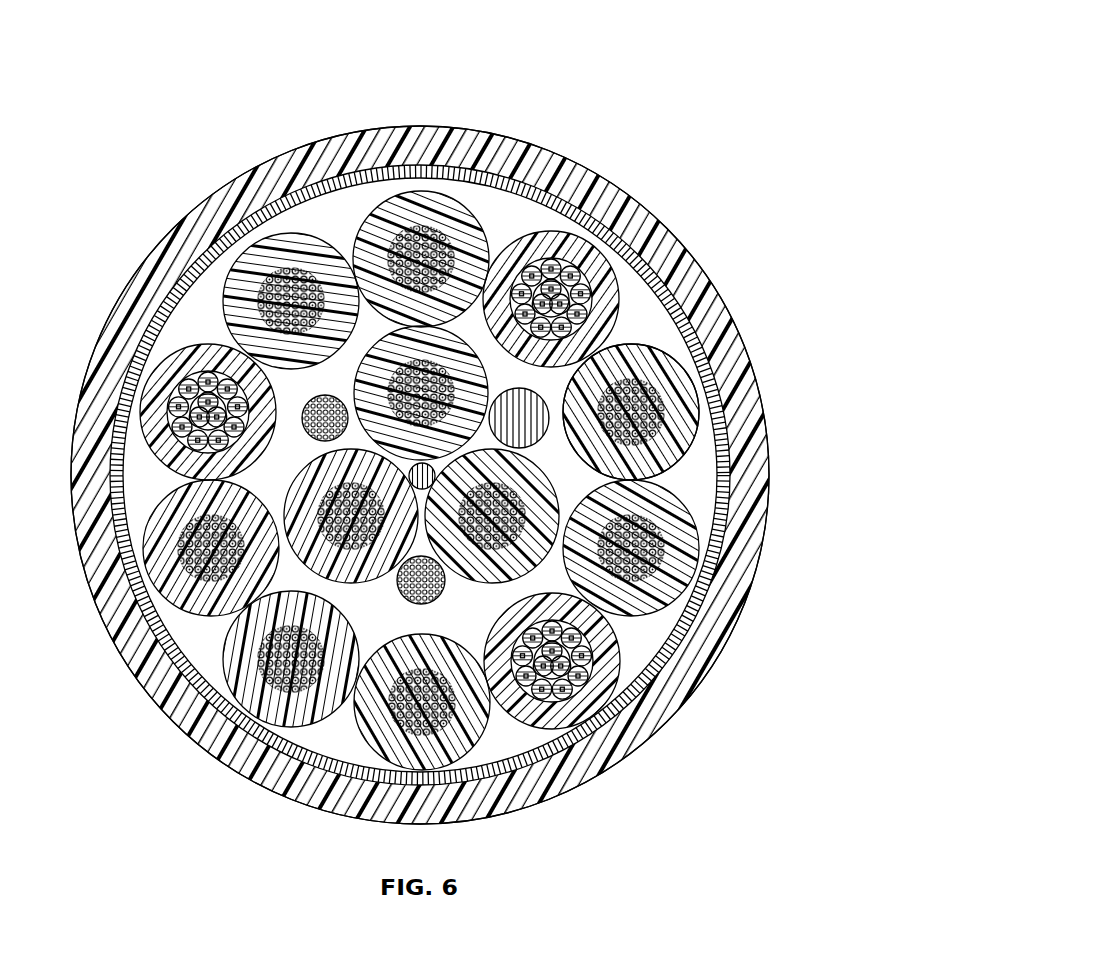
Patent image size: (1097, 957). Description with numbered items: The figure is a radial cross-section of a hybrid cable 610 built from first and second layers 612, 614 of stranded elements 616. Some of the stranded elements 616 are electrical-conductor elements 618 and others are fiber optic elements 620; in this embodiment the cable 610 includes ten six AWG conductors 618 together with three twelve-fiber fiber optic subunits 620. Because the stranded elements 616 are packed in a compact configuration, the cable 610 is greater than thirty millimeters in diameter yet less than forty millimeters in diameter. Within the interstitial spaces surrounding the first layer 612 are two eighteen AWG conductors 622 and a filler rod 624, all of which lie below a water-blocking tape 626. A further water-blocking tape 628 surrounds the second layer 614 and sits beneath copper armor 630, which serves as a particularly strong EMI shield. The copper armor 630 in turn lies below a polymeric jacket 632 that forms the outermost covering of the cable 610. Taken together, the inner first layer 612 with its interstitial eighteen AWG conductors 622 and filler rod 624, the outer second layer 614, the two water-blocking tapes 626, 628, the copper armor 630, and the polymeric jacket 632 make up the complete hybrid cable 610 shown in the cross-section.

The hybrid cable 610 is at (420, 418).
The first layer 612 is at (500, 217).
The second layer 614 is at (353, 362).
The stranded elements 616 is at (653, 353).
The electrical-conductor elements 618 is at (715, 498).
The fiber optic elements 620 is at (577, 712).
The 18 AWG conductors 622 is at (259, 780).
The filler rod 624 is at (532, 425).
The water-blocking tape 626 is at (220, 530).
The water-blocking tape 628 is at (166, 619).
The copper armor 630 is at (200, 722).
The polymeric jacket 632 is at (230, 733).